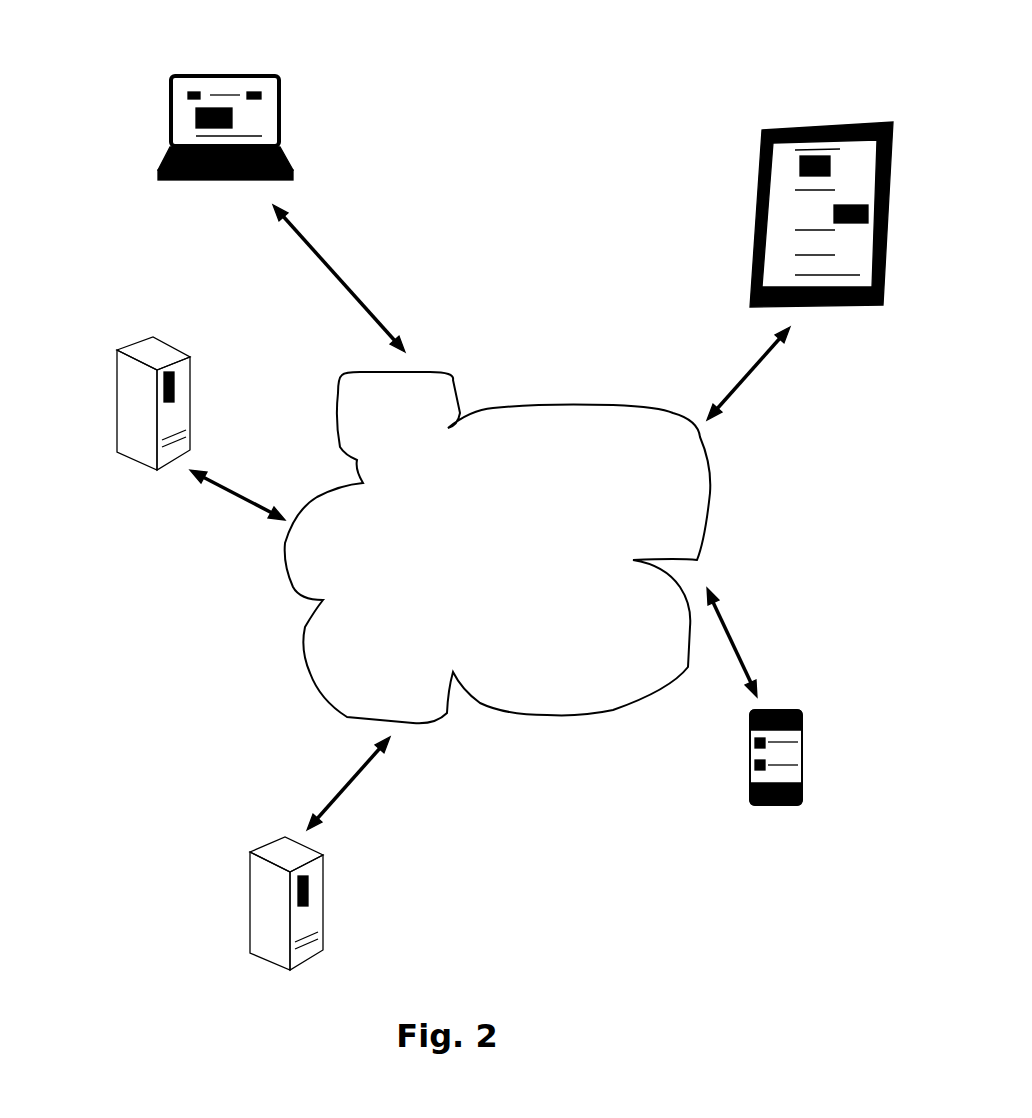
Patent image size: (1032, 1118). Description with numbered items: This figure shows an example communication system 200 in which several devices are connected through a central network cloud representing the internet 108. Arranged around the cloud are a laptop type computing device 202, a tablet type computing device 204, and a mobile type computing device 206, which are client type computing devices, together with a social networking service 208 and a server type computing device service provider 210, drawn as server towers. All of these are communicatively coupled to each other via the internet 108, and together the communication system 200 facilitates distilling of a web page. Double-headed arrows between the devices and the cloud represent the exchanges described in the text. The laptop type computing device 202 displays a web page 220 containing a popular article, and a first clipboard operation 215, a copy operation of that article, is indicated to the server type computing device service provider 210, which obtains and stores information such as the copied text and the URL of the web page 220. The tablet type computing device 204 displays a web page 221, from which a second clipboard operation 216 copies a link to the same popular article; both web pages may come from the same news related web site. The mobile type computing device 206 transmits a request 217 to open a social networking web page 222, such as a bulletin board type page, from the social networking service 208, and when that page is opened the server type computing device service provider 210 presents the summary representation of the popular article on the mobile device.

The communication system 200 is at (485, 38).
The internet 108 is at (452, 556).
The laptop type computing device 202 is at (290, 120).
The web page 220 is at (203, 103).
The tablet type computing device 204 is at (738, 187).
The web page 221 is at (837, 170).
The mobile type computing device 206 is at (740, 787).
The social networking web page 222 is at (790, 768).
The social networking service 208 is at (172, 337).
The server type computing device service provider 210 is at (240, 885).
The first clipboard operation 215 is at (338, 268).
The second clipboard operation 216 is at (738, 372).
The request 217 is at (738, 652).